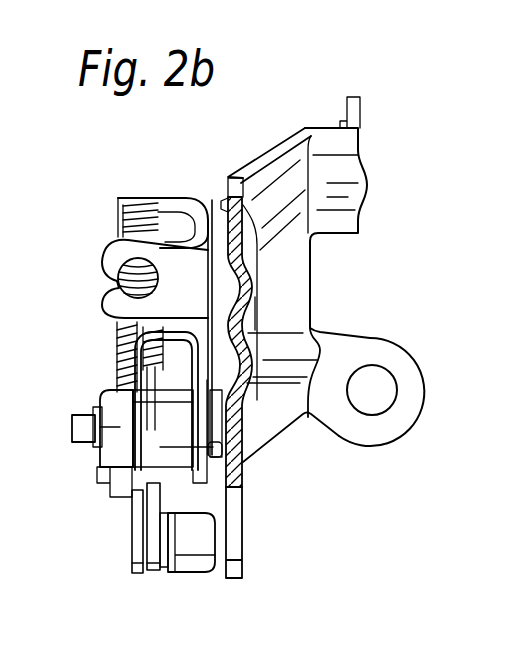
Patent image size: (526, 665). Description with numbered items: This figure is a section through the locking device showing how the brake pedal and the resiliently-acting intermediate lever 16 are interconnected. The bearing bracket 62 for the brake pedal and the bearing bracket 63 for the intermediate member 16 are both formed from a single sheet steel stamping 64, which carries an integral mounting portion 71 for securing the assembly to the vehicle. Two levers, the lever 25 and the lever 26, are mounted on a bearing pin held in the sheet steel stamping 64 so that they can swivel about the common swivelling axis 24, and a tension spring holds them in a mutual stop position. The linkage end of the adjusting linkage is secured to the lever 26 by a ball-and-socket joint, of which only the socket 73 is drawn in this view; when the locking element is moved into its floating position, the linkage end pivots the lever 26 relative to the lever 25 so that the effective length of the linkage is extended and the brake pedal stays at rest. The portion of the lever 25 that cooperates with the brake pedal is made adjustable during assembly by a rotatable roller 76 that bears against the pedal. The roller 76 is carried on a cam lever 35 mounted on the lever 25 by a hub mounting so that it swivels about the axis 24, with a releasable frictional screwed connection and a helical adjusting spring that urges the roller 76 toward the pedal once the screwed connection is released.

The intermediate lever 16 is at (95, 225).
The lever 26 is at (173, 193).
The bearing bracket 62 is at (305, 126).
The sheet steel stamping 64 is at (315, 270).
The mounting portion 71 is at (399, 338).
The socket 73 is at (107, 300).
The swivelling axis 24 is at (67, 427).
The bearing bracket 63 is at (249, 470).
The lever 25 is at (127, 557).
The cam lever 35 is at (149, 571).
The rotatable roller 76 is at (191, 578).